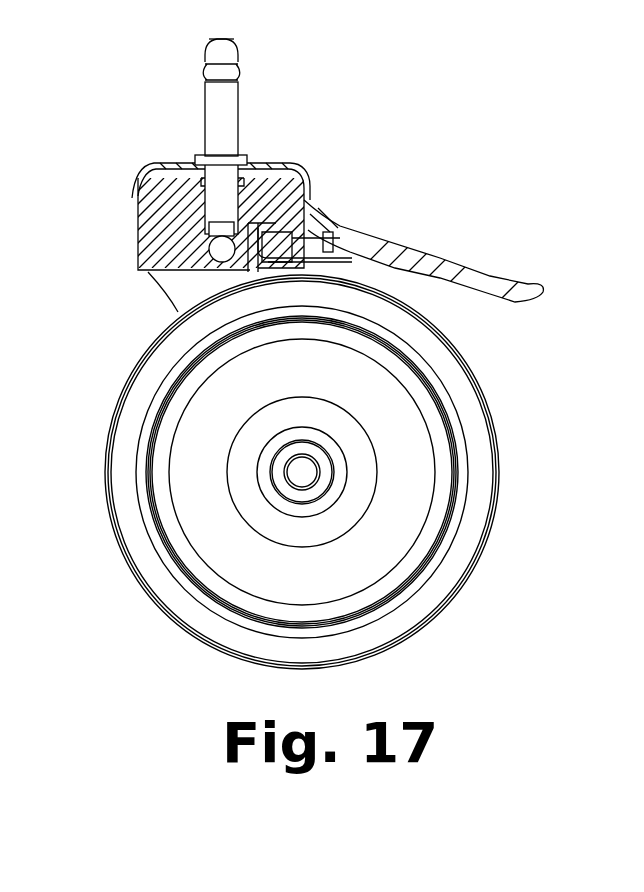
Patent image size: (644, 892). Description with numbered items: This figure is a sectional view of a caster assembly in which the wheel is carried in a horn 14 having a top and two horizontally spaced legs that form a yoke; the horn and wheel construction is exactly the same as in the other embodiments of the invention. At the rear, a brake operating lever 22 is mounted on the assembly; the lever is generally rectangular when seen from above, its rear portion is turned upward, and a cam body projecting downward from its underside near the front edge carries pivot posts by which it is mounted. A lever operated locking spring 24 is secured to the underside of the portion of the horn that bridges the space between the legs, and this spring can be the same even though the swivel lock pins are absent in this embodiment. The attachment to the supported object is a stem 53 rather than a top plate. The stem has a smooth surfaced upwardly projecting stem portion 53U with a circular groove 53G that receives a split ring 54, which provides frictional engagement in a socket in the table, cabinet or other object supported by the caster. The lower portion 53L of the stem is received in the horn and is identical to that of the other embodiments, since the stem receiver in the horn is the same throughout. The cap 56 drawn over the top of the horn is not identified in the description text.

The caster housing 14 is at (128, 258).
The wheel 22 is at (490, 258).
The brake lever 24 is at (385, 262).
The stem 53 is at (332, 132).
The stem groove ring 53G is at (240, 70).
The lower stem portion 53L is at (212, 198).
The upper stem portion 53U is at (239, 106).
The stem cap 54 is at (205, 70).
The housing cap 56 is at (162, 161).